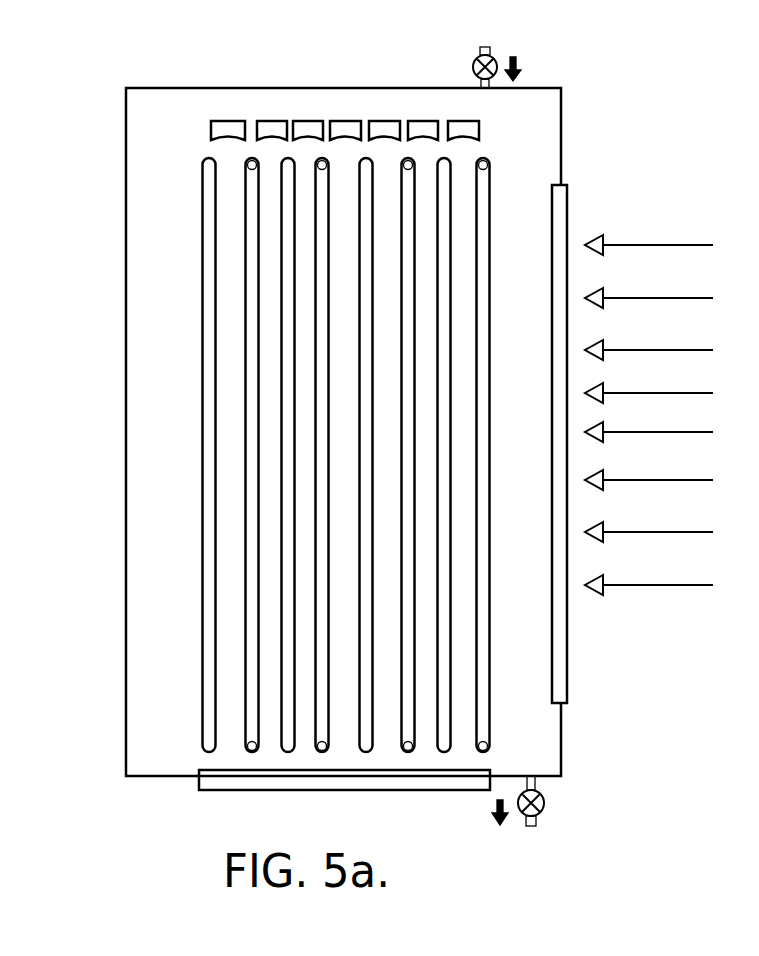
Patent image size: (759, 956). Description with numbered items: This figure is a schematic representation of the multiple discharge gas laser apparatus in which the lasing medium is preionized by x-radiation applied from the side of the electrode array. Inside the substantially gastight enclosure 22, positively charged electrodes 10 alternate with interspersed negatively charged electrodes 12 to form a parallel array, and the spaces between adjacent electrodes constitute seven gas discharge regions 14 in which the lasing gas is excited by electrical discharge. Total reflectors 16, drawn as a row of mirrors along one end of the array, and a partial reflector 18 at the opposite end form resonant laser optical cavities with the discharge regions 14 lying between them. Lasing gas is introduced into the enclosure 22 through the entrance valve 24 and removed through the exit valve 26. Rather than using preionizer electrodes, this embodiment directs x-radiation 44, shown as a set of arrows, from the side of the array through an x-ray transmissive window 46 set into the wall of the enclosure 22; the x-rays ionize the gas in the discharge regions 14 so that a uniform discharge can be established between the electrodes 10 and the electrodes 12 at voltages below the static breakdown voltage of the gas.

The positively charged electrodes 10 is at (288, 707).
The negatively charged electrodes 12 is at (287, 575).
The gas discharge regions 14 is at (307, 190).
The total reflectors 16 is at (340, 121).
The partial reflector 18 is at (199, 790).
The enclosure 22 is at (126, 325).
The entrance valve 24 is at (497, 62).
The exit valve 26 is at (545, 800).
The x-radiation 44 is at (662, 381).
The x-ray transmissive window 46 is at (568, 685).